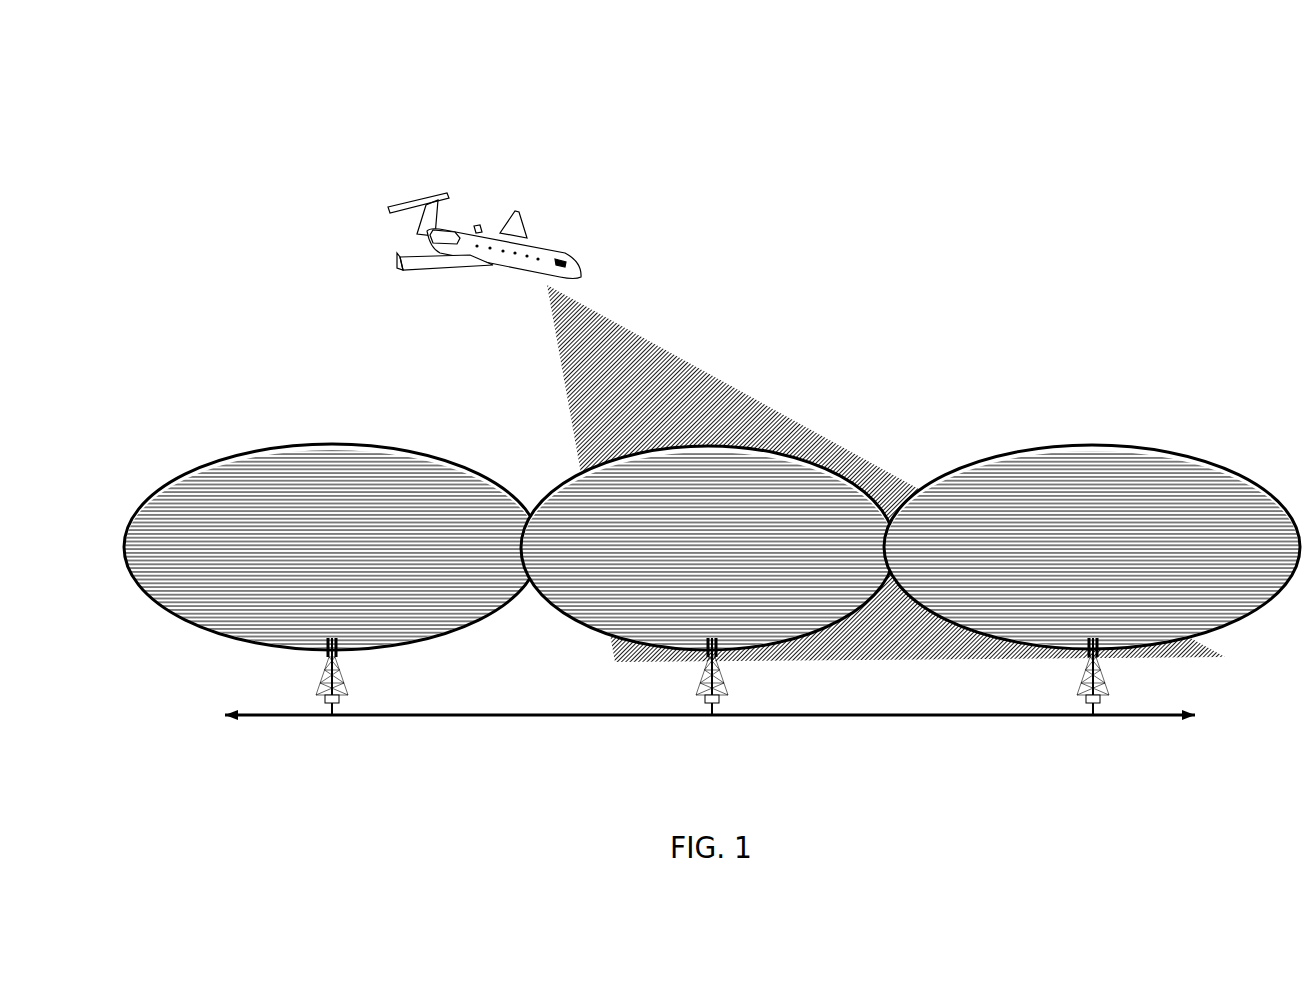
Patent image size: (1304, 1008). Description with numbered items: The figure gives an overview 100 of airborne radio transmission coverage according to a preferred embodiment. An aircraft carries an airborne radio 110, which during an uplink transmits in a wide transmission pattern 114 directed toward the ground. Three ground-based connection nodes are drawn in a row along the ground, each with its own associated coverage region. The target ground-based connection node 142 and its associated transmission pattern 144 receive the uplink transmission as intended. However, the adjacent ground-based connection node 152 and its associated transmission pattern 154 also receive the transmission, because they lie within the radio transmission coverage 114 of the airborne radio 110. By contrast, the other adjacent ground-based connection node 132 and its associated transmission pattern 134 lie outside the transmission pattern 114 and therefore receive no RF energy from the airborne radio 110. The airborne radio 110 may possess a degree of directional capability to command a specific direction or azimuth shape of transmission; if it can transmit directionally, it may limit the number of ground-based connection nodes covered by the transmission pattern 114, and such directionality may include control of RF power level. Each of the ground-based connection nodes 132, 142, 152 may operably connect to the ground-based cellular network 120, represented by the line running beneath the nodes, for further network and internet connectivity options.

The communication system 100 is at (168, 118).
The airborne radio 110 is at (532, 243).
The transmission pattern 114 is at (873, 463).
The ground-based cellular network 120 is at (615, 717).
The adjacent ground-based connection node 132 is at (347, 683).
The transmission pattern 134 is at (328, 450).
The target ground-based connection node 142 is at (702, 683).
The transmission pattern 144 is at (562, 484).
The adjacent ground-based connection node 152 is at (1107, 685).
The transmission pattern 154 is at (1085, 450).